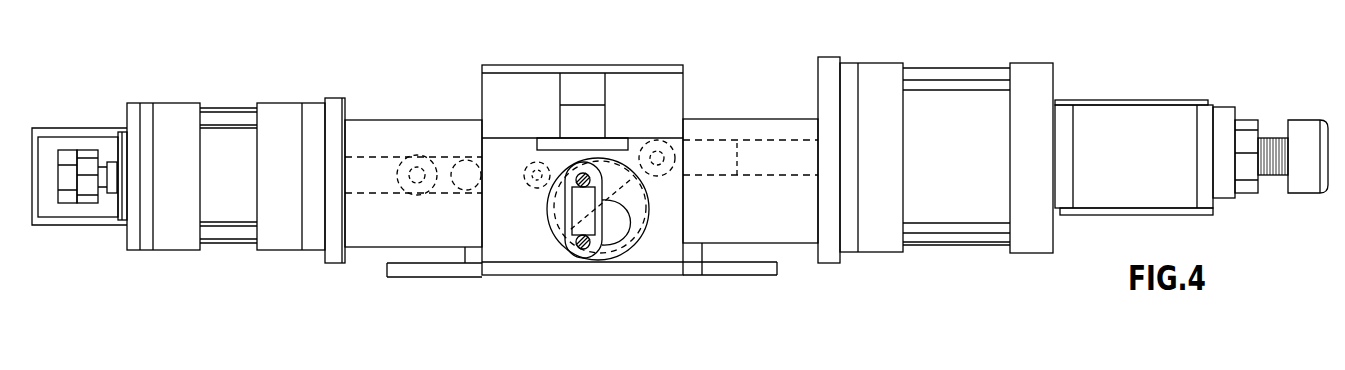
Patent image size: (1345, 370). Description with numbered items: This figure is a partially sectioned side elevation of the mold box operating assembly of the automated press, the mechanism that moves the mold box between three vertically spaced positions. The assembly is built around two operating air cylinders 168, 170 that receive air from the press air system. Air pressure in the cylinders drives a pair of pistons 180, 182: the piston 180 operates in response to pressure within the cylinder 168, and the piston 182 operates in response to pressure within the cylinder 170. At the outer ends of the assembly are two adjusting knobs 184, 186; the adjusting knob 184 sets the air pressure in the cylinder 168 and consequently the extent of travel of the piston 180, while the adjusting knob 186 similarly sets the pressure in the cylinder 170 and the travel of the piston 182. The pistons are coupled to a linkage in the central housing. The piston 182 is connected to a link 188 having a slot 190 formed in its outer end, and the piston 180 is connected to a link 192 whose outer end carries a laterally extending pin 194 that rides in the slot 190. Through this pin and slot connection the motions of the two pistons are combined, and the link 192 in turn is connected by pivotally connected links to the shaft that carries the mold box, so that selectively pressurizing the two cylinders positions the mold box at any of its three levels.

The operating air cylinder 168 is at (957, 247).
The operating air cylinder 170 is at (238, 246).
The piston 180 is at (777, 147).
The piston 182 is at (387, 158).
The adjusting knob 184 is at (1303, 127).
The adjusting knob 186 is at (95, 128).
The link 188 is at (452, 158).
The slot 190 is at (500, 167).
The link 192 is at (635, 147).
The pin 194 is at (527, 180).